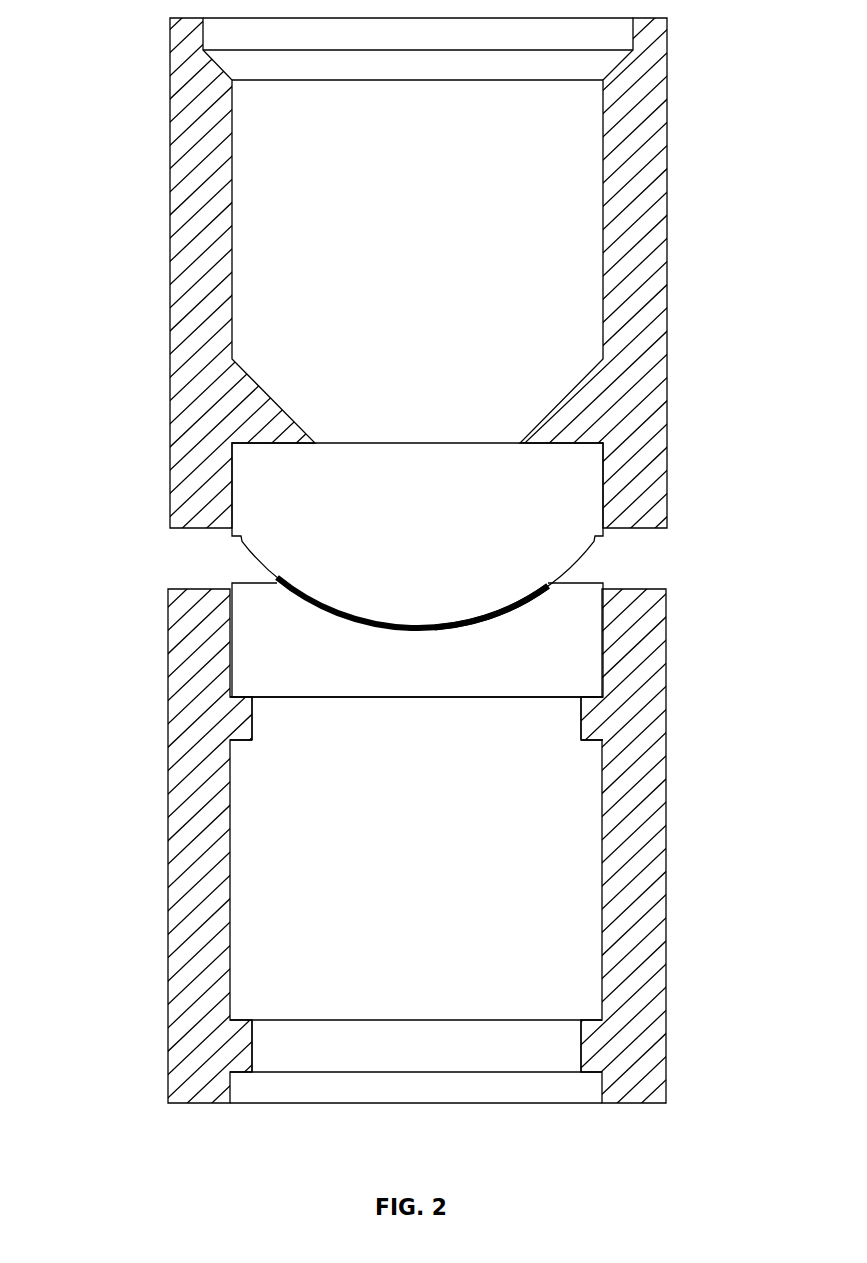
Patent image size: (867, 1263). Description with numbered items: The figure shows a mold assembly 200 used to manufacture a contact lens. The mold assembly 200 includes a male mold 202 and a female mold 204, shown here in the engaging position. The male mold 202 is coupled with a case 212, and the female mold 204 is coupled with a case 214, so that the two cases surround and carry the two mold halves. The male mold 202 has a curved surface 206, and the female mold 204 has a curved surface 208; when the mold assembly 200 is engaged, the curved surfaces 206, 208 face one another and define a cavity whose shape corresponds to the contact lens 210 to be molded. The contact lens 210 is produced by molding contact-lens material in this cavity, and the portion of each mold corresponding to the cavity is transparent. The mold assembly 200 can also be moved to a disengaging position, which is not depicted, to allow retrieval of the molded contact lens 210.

The mold assembly 200 is at (112, 944).
The male mold 202 is at (352, 453).
The female mold 204 is at (360, 683).
The curved surface 206 is at (353, 608).
The curved surface 208 is at (382, 627).
The contact lens 210 is at (435, 624).
The case 212 is at (655, 90).
The case 214 is at (653, 847).